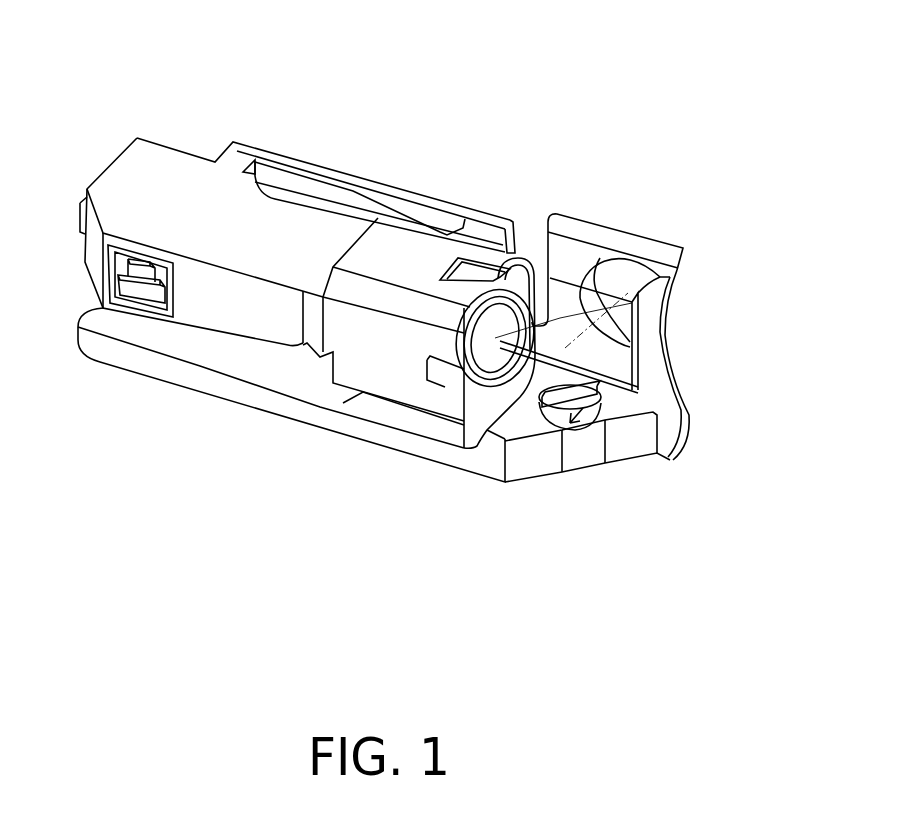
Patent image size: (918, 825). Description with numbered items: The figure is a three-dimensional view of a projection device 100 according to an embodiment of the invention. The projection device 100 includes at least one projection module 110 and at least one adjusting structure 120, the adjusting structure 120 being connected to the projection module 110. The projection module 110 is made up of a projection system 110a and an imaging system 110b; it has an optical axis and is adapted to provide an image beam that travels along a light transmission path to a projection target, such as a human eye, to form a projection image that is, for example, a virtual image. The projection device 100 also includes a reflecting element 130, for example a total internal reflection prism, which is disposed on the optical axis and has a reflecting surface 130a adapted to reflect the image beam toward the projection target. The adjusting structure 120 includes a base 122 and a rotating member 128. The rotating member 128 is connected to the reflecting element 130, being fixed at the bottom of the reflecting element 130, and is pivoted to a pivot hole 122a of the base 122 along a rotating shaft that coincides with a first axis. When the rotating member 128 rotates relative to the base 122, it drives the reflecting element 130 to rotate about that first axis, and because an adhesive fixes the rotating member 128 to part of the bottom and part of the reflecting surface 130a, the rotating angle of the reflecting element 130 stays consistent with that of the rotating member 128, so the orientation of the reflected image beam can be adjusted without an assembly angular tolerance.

The projection device 100 is at (745, 648).
The projection module 110 is at (469, 62).
The projection system 110a is at (293, 137).
The imaging system 110b is at (460, 200).
The adjusting structure 120 is at (695, 315).
The base 122 is at (537, 468).
The pivot hole 122a is at (608, 420).
The rotating member 128 is at (637, 405).
The reflecting element 130 is at (610, 322).
The reflecting surface 130a is at (618, 358).